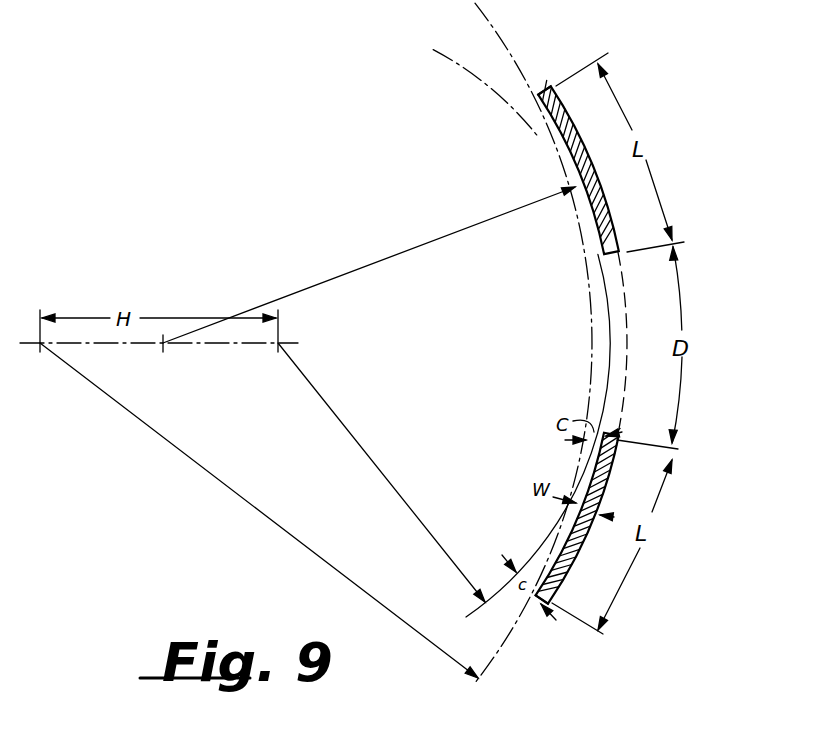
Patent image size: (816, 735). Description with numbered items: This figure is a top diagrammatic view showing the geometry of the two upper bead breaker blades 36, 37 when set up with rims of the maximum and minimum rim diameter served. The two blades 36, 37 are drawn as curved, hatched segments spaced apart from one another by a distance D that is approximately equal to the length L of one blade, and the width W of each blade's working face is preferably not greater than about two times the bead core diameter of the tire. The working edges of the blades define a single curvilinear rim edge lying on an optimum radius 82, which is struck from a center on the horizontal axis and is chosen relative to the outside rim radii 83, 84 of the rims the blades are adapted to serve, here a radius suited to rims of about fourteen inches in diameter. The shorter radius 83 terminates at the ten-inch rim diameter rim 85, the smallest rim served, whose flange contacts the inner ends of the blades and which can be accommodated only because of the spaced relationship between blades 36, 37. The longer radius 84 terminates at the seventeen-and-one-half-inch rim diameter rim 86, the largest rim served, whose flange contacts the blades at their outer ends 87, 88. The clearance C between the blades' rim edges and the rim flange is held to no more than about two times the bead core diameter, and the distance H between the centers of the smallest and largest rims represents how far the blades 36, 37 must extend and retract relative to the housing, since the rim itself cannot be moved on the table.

The upper bead breaker blade 36 is at (563, 146).
The upper bead breaker blade 37 is at (602, 497).
The radius of curvature of the blades 82 is at (376, 254).
The outside rim radius 83 is at (383, 459).
The outside rim radius 84 is at (219, 484).
The ten-inch rim diameter rim 85 is at (473, 612).
The seventeen-and-one-half-inch rim diameter rim 86 is at (474, 700).
The outer end of bead breaker blade 87 is at (540, 94).
The outer end of bead breaker blade 88 is at (552, 583).